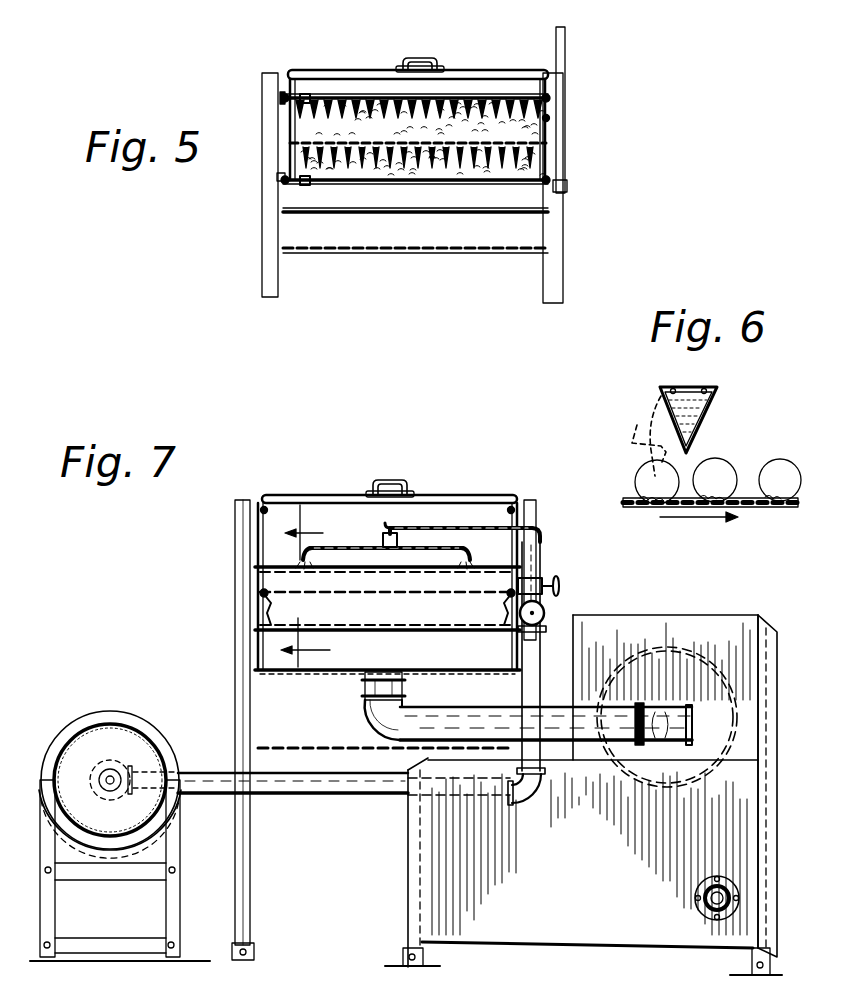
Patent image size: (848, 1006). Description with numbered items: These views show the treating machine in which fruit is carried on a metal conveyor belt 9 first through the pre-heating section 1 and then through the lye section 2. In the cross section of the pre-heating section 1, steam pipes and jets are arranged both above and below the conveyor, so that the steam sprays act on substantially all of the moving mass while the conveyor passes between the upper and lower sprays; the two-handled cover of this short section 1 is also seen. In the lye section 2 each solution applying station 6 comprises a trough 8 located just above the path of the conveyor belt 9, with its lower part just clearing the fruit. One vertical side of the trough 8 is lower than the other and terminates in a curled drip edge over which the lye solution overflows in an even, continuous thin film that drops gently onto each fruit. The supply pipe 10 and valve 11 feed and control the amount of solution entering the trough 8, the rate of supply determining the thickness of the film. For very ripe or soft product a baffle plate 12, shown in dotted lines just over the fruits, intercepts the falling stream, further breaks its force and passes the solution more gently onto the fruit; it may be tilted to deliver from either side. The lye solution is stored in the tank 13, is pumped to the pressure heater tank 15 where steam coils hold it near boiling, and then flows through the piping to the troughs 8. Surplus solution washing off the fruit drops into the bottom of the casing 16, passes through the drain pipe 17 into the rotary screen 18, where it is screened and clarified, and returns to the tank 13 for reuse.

In FIG. 5, the pre-heating section 1 is at (475, 71).
In FIG. 7, the lye section 2 is at (455, 498).
In FIG. 7, the solution applying station 6 is at (307, 586).
In FIG. 6, the trough 8 is at (707, 419).
In FIG. 7, the trough 8 is at (287, 582).
In FIG. 5, the metal conveyor belt 9 is at (549, 140).
In FIG. 6, the metal conveyor belt 9 is at (629, 500).
In FIG. 7, the metal conveyor belt 9 is at (420, 629).
In FIG. 7, the supply pipe 10 is at (388, 533).
In FIG. 7, the valve 11 is at (561, 590).
In FIG. 6, the baffle plate 12 is at (640, 436).
In FIG. 7, the tank 13 is at (583, 795).
In FIG. 7, the pressure heater tank 15 is at (140, 730).
In FIG. 7, the casing 16 is at (387, 650).
In FIG. 7, the drain pipe 17 is at (446, 712).
In FIG. 7, the rotary screen 18 is at (665, 704).